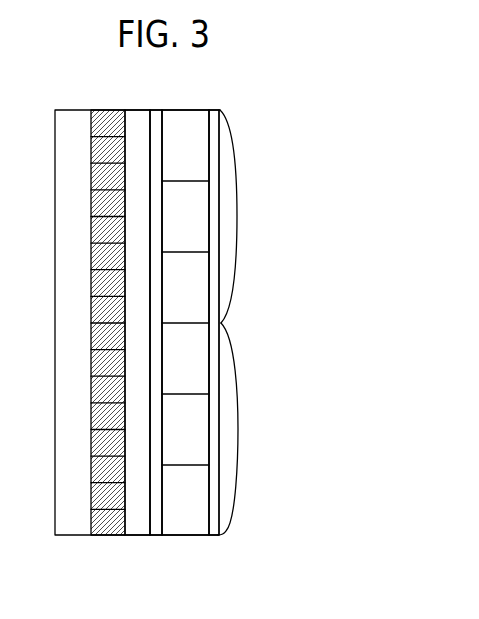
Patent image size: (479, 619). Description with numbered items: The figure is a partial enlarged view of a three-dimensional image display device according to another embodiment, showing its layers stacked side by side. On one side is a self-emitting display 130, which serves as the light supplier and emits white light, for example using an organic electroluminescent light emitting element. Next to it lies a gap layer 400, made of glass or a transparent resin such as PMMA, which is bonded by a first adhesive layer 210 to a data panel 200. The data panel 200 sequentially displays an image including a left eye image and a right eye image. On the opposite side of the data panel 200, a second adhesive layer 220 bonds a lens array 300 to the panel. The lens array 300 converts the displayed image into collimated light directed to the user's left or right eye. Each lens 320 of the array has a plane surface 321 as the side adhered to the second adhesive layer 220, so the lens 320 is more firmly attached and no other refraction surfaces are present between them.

The self-emitting display 130 is at (92, 548).
The gap layer 400 is at (137, 531).
The first adhesive layer 210 is at (158, 531).
The data panel 200 is at (188, 531).
The second adhesive layer 220 is at (217, 533).
The lens array 300 is at (272, 322).
The lens 320 is at (232, 215).
The plane surface 321 is at (222, 428).